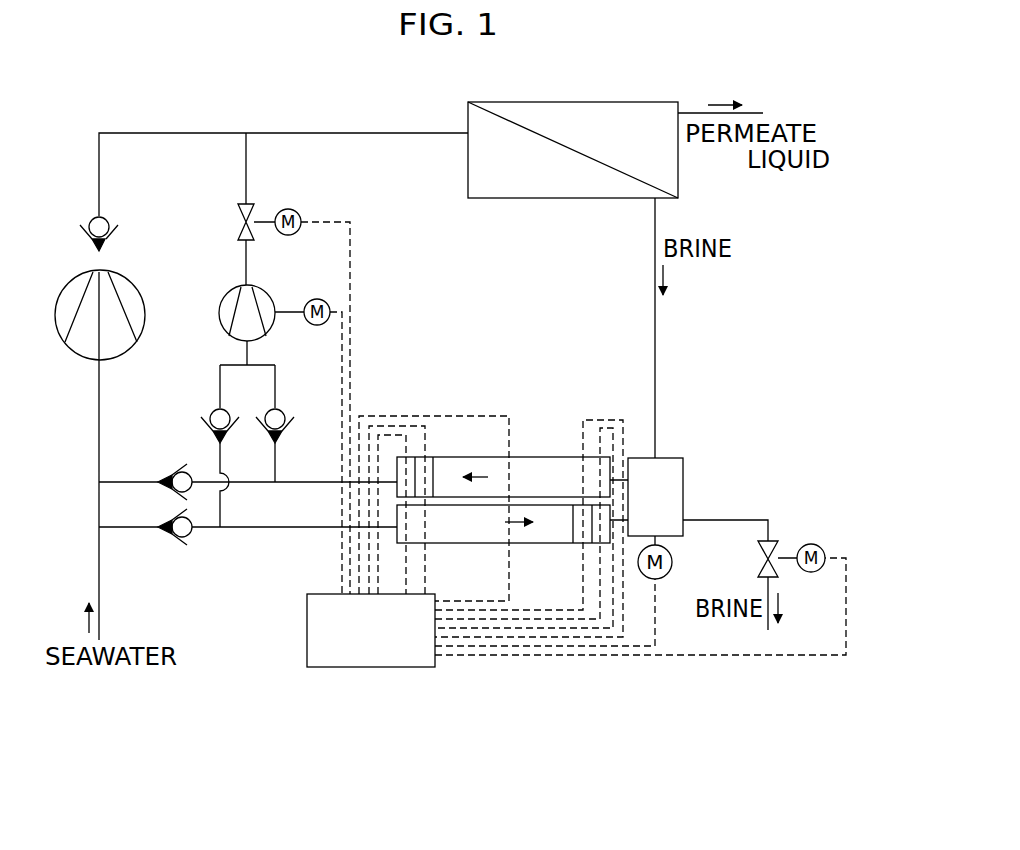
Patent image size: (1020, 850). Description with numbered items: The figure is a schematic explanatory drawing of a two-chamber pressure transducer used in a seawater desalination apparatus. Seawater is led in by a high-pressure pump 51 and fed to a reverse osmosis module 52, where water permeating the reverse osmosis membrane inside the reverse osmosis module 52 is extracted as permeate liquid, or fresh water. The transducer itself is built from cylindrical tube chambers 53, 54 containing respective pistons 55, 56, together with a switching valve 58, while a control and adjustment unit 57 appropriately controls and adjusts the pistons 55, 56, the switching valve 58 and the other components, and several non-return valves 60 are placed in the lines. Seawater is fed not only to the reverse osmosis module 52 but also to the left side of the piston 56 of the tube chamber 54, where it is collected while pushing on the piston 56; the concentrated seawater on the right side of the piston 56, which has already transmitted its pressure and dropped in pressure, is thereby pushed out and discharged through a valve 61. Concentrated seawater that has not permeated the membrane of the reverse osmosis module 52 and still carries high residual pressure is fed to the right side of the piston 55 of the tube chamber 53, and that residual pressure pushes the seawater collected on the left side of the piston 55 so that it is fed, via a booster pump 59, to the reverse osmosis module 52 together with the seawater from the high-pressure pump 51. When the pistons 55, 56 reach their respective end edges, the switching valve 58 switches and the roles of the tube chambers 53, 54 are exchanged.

The high-pressure pump 51 is at (130, 292).
The reverse osmosis module 52 is at (555, 193).
The tube chamber 53 is at (543, 458).
The tube chamber 54 is at (477, 537).
The piston 55 is at (443, 470).
The piston 56 is at (577, 520).
The control and adjustment unit 57 is at (400, 660).
The switching valve 58 is at (678, 473).
The booster pump 59 is at (230, 303).
The non-return valve 60 is at (105, 218).
The valve 61 is at (772, 540).